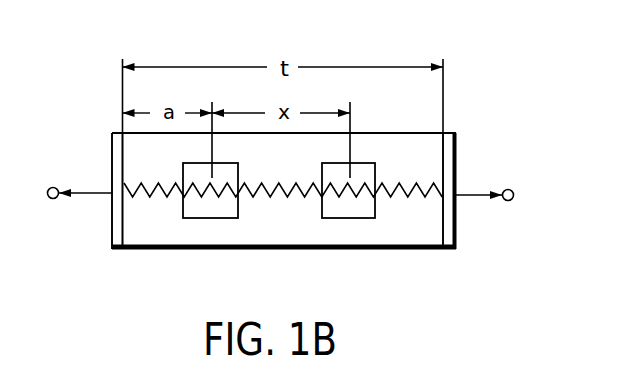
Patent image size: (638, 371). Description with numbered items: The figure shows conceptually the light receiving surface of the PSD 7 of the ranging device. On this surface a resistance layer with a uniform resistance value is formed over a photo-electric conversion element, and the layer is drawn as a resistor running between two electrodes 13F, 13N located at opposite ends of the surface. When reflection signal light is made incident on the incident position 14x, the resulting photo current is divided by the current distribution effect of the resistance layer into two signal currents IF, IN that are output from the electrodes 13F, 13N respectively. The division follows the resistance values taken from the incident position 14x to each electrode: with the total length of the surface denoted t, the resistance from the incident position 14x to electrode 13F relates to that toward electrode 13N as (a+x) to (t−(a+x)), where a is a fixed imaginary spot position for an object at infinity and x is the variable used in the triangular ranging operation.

The PSD 7 is at (273, 249).
The electrode 13F is at (112, 222).
The electrode 13N is at (456, 222).
The incident position 14x is at (376, 168).
The signal current IF is at (80, 178).
The signal current IN is at (488, 180).